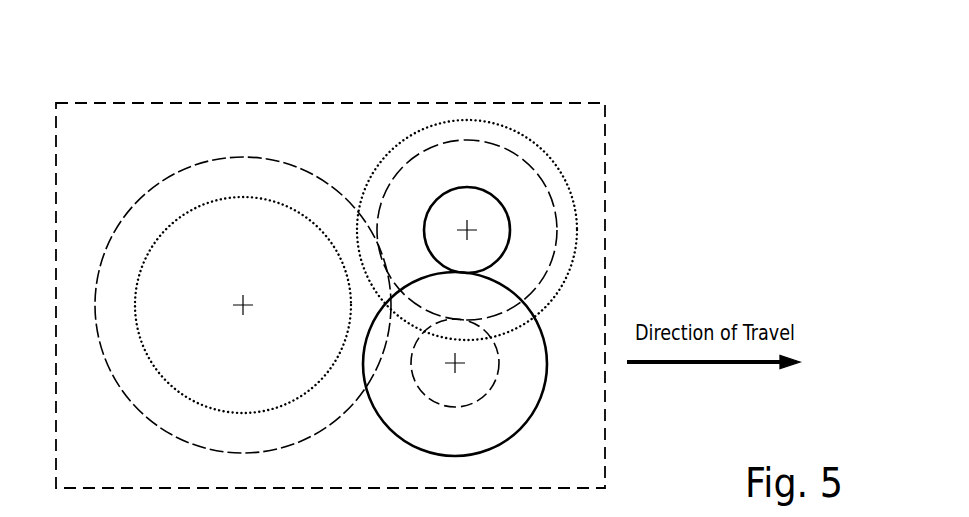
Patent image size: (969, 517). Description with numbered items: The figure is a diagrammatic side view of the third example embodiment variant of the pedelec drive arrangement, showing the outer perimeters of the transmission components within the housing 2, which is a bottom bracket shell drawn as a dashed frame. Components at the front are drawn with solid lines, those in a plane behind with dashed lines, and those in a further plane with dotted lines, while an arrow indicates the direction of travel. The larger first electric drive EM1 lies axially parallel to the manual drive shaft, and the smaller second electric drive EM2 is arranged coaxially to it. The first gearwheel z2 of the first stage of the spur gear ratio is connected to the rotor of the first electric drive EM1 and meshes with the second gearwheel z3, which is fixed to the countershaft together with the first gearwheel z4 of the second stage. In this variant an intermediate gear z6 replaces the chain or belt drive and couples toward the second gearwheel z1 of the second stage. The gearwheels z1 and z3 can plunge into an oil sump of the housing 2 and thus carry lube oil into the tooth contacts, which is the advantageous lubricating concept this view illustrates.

The housing 2 is at (405, 103).
The first electric drive EM1 is at (502, 149).
The second electric drive EM2 is at (226, 224).
The second gearwheel of the second stage of the spur gear ratio z1 is at (243, 305).
The first gearwheel of the first stage of the spur gear ratio z2 is at (467, 230).
The second gearwheel of the first stage of the spur gear ratio z3 is at (455, 364).
The first gearwheel of the second stage of the spur gear ratio z4 is at (455, 363).
The intermediate gear z6 is at (467, 230).